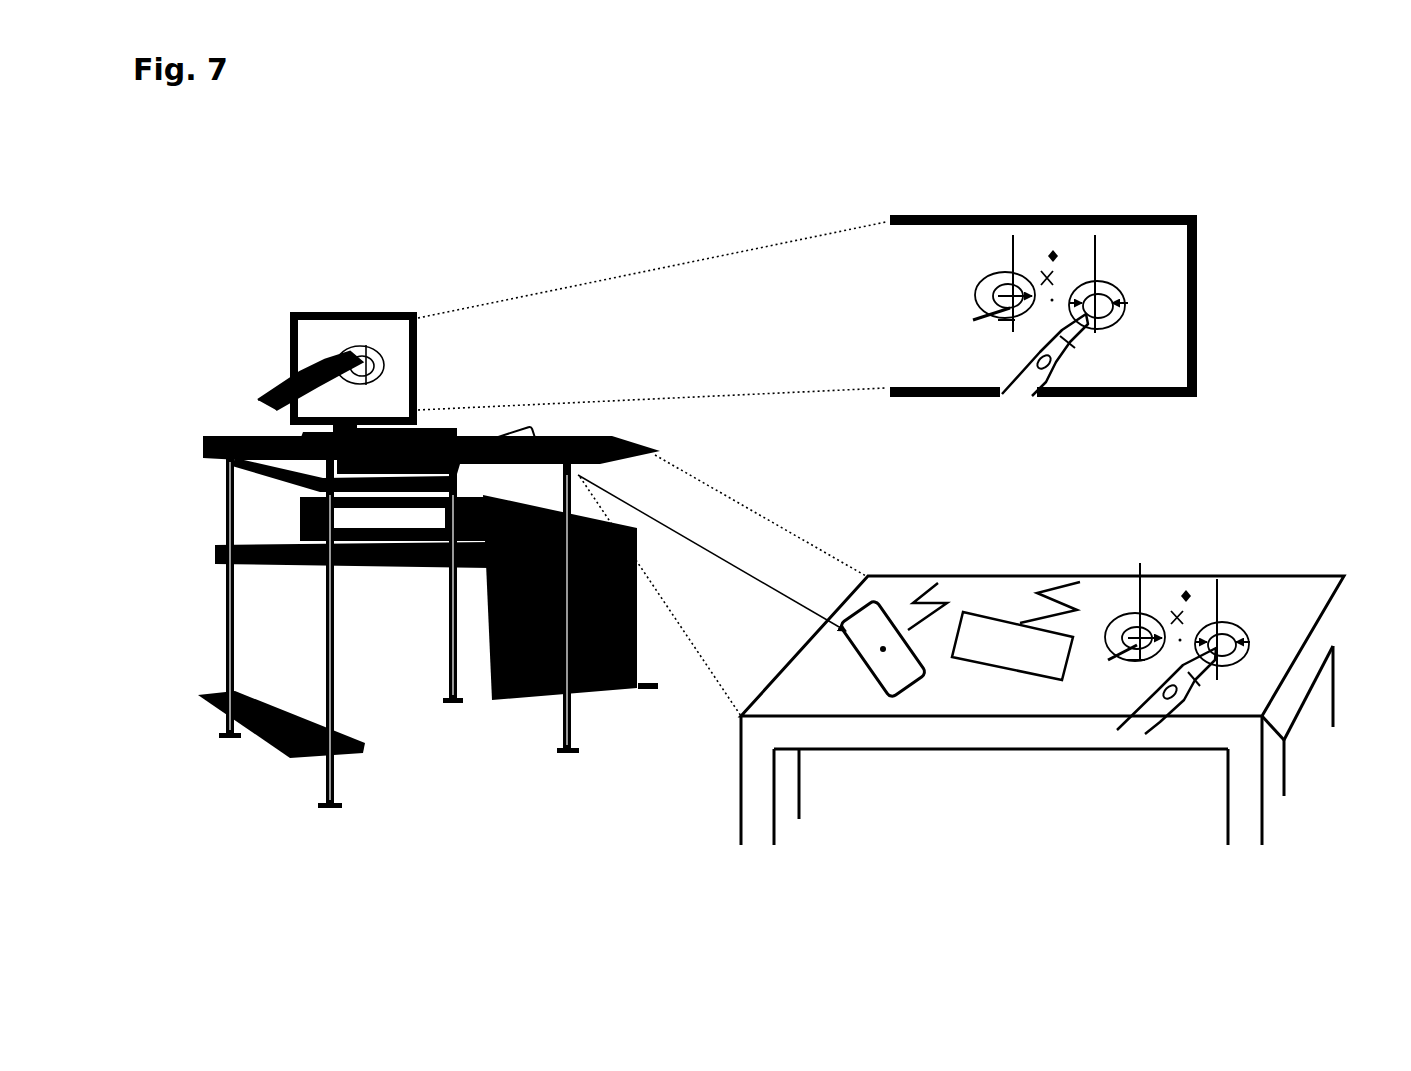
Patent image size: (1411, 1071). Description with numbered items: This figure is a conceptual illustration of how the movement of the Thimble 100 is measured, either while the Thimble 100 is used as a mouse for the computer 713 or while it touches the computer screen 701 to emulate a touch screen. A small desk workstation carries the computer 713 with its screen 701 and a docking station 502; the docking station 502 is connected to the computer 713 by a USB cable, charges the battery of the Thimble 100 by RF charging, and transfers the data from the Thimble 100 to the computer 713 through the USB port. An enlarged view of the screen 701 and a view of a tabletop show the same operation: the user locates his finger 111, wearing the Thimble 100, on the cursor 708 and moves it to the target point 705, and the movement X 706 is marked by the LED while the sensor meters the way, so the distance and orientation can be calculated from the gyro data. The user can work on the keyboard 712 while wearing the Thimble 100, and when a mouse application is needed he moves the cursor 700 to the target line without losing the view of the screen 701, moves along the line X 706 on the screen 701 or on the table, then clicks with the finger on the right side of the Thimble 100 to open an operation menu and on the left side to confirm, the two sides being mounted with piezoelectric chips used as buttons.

The cursor 700 is at (463, 160).
The computer screen 701 is at (390, 330).
The target point 705 is at (336, 346).
The movement X 706 is at (1050, 252).
The cursor 708 is at (1130, 302).
The Thimble 100 is at (333, 351).
The finger 111 is at (1190, 676).
The docking station 502 is at (518, 436).
The keyboard 712 is at (998, 626).
The computer 713 is at (520, 702).